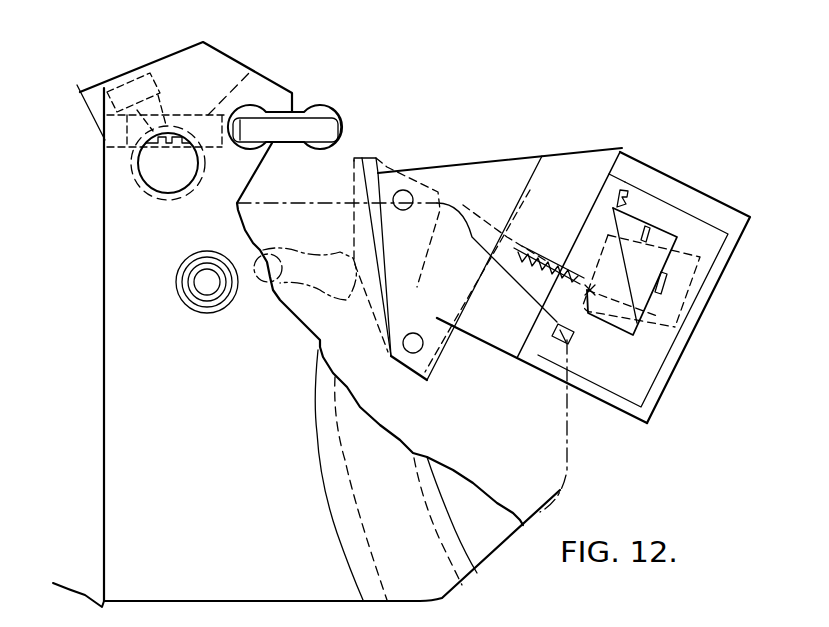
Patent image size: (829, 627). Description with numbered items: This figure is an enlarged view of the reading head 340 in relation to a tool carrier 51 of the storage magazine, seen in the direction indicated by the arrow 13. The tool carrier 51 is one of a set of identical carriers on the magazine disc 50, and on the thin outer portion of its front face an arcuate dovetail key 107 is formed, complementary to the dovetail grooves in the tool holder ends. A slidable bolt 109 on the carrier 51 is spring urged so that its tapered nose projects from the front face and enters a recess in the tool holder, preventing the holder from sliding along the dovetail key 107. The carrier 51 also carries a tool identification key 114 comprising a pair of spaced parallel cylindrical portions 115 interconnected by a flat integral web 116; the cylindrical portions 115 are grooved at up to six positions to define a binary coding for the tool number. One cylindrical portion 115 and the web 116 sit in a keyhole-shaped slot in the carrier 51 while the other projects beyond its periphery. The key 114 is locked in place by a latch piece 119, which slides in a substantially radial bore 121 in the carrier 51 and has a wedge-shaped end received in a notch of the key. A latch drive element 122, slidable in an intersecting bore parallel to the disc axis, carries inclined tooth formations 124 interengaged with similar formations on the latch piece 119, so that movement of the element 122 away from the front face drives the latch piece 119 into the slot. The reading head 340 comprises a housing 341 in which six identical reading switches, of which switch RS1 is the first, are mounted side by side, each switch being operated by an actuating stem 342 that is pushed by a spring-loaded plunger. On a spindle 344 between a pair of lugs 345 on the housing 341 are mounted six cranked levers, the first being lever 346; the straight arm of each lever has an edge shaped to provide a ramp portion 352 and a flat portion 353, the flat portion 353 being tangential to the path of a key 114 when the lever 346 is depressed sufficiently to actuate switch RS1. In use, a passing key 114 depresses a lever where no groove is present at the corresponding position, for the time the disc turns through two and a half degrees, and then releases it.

The disc 50 is at (95, 465).
The tool carrier 51 is at (130, 243).
The arcuate dovetail key 107 is at (380, 562).
The slidable bolt 109 is at (207, 285).
The key 114 is at (317, 122).
The cylindrical portion 115 is at (325, 130).
The web 116 is at (297, 130).
The latch piece 119 is at (252, 70).
The radial bore 121 is at (102, 129).
The latch drive element 122 is at (168, 183).
The inclined tooth formations 124 is at (173, 147).
The view direction 13 is at (409, 159).
The reading head 340 is at (618, 414).
The housing 341 is at (657, 380).
The actuating stem 342 is at (675, 327).
The spindle 344 is at (412, 353).
The lugs 345 is at (437, 320).
The cranked lever 346 is at (378, 283).
The ramp portion 352 is at (355, 178).
The flat portion 353 is at (355, 242).
The reading switch RS1 is at (640, 262).